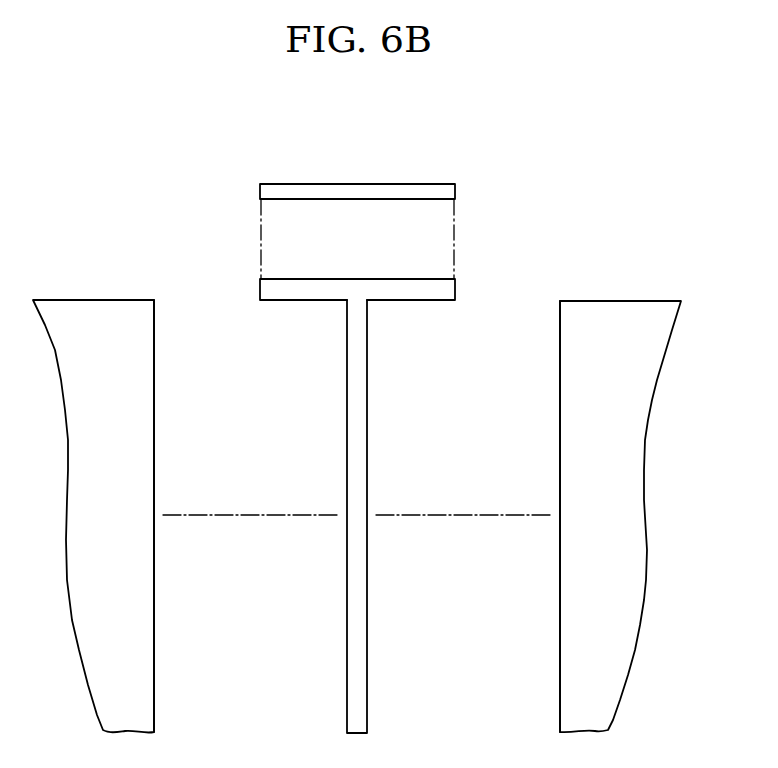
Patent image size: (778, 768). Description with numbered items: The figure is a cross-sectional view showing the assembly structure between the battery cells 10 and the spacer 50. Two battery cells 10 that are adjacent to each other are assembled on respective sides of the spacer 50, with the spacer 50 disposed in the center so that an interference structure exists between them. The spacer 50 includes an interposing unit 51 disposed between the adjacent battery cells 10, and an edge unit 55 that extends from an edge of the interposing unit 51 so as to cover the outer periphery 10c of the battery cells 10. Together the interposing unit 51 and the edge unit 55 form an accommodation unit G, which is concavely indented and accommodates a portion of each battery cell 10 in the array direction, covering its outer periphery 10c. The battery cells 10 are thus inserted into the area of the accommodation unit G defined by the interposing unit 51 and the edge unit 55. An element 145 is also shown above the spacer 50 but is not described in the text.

The battery cell 10 is at (127, 528).
The outer periphery of the battery cell 10c is at (154, 403).
The accommodation unit G is at (308, 504).
The mask pattern 145 is at (358, 190).
The spacer 50 is at (342, 466).
The edge unit 55 is at (449, 291).
The interposing unit 51 is at (361, 380).